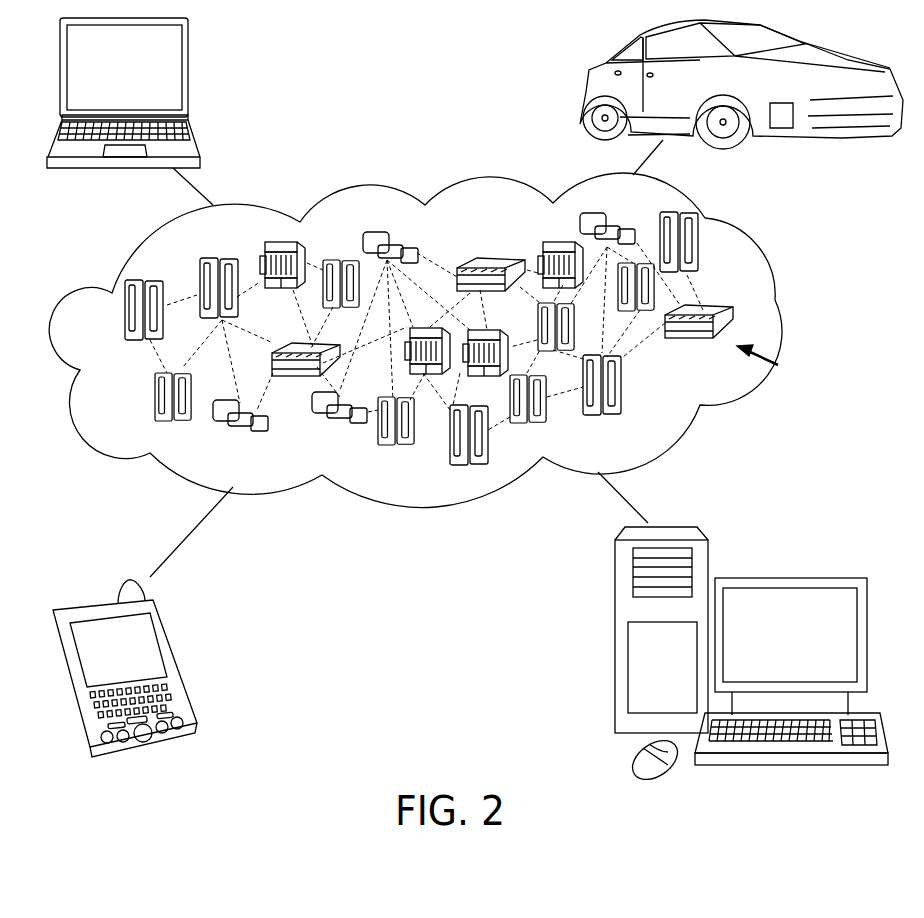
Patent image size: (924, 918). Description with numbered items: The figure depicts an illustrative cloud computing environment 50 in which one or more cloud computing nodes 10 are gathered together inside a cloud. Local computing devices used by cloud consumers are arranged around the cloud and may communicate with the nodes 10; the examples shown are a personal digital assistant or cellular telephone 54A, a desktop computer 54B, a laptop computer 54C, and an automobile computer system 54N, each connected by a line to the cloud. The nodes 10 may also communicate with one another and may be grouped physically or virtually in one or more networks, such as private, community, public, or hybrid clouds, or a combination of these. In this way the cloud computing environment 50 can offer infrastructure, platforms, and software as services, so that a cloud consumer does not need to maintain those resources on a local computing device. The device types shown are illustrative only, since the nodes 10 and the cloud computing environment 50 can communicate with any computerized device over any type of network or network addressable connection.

The laptop computer 54C is at (187, 76).
The automobile computer system 54N is at (588, 90).
The personal digital assistant (PDA) or cellular telephone 54A is at (180, 664).
The desktop computer 54B is at (787, 578).
The cloud computing environment 50 is at (789, 320).
The cloud computing node 10 is at (778, 365).